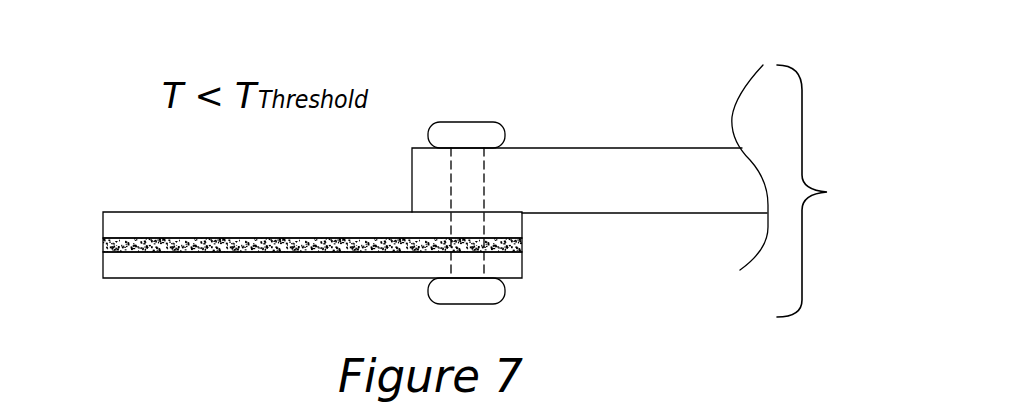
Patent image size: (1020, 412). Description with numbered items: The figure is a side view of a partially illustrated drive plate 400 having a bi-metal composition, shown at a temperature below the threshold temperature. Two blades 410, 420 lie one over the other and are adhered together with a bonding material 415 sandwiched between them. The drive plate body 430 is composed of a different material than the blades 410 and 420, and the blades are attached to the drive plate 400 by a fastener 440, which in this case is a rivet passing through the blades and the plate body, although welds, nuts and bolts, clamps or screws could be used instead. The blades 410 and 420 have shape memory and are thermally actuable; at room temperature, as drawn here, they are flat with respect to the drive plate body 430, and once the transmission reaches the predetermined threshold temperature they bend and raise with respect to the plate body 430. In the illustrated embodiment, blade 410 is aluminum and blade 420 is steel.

The drive plate 400 is at (805, 191).
The blade 410 is at (113, 226).
The bonding material 415 is at (168, 252).
The blade 420 is at (110, 265).
The drive plate body 430 is at (633, 167).
The fastener 440 is at (478, 133).